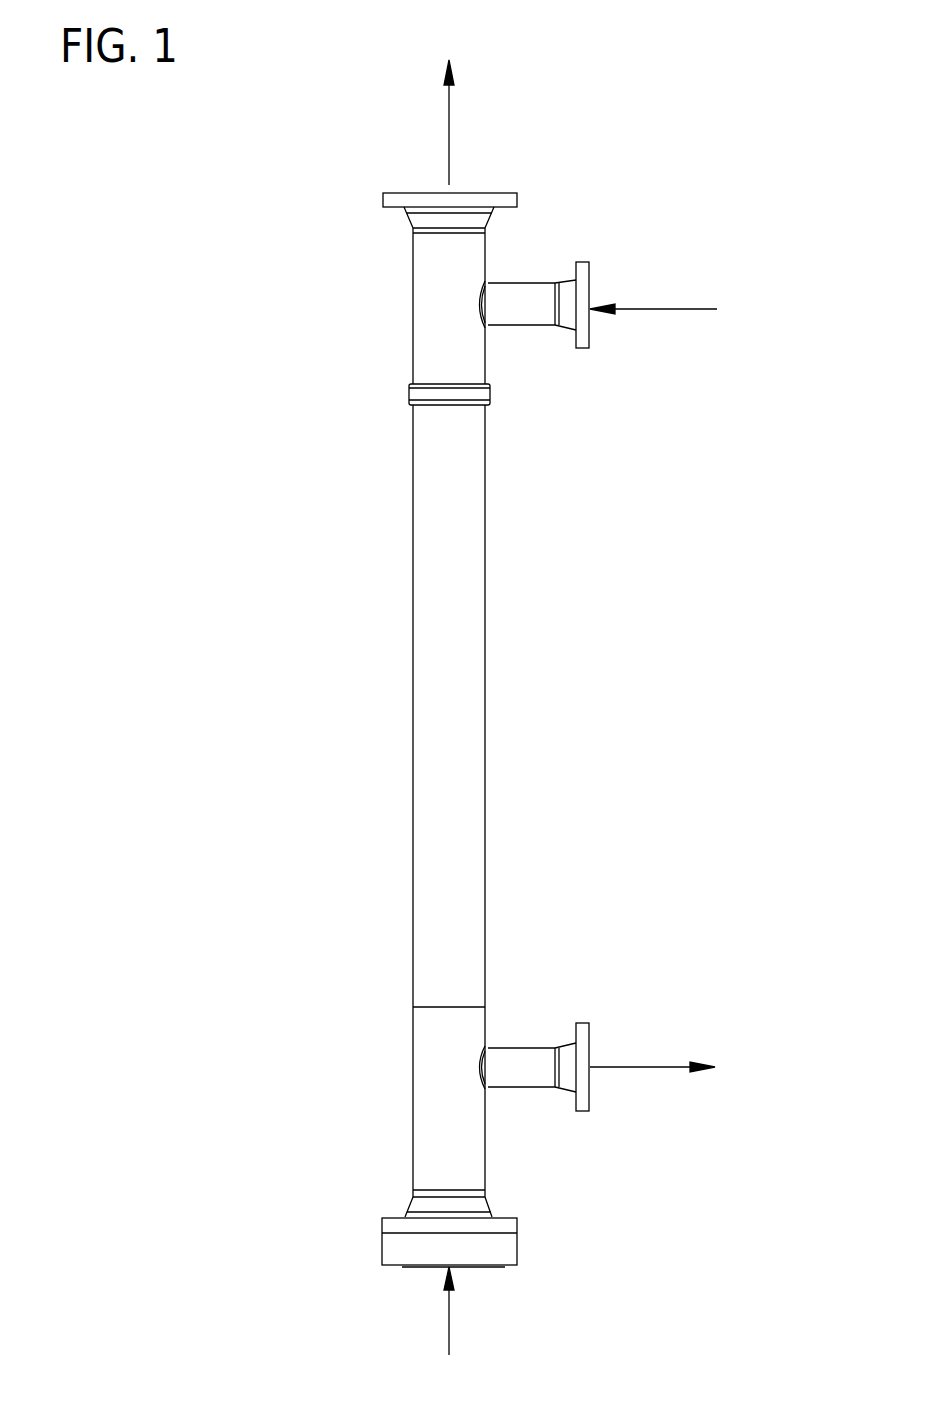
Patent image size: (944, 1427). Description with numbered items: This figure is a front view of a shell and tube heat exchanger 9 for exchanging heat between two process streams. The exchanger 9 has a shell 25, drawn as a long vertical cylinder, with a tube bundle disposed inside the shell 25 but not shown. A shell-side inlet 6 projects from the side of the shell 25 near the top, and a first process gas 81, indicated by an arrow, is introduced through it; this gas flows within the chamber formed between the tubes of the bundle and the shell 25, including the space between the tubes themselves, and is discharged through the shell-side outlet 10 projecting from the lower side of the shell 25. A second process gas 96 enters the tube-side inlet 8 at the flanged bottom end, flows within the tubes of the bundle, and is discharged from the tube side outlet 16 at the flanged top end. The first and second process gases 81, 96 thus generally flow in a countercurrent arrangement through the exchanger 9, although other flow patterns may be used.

The shell and tube heat exchanger 9 is at (202, 282).
The tube side outlet 16 is at (417, 192).
The shell-side inlet 6 is at (582, 350).
The shell 25 is at (486, 555).
The shell-side outlet 10 is at (589, 1043).
The tube-side inlet 8 is at (508, 1267).
The second process gas 96 is at (449, 110).
The first process gas 81 is at (695, 310).